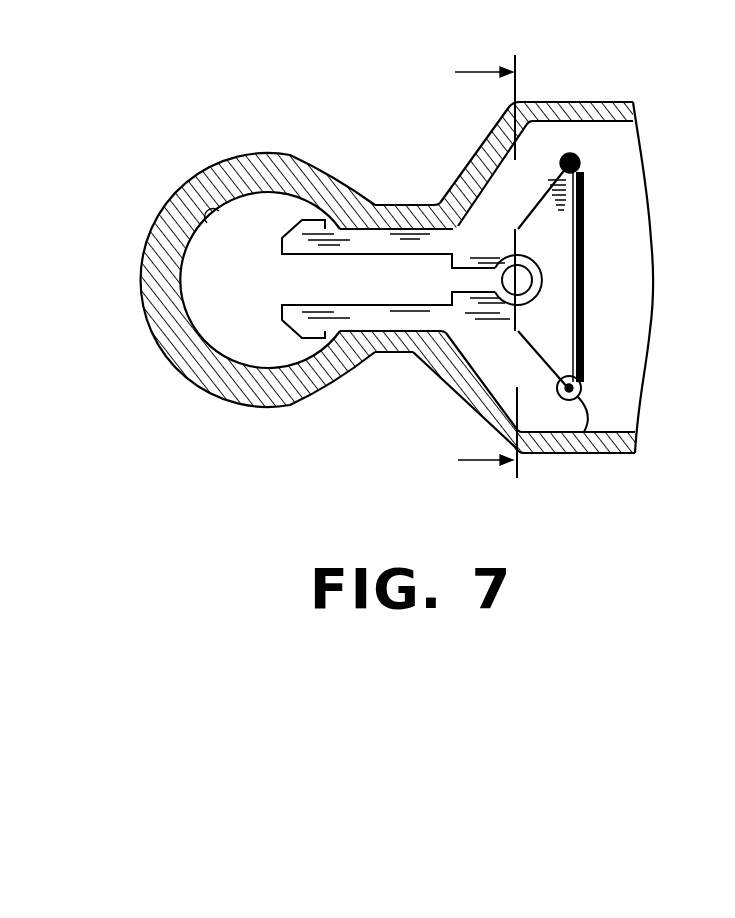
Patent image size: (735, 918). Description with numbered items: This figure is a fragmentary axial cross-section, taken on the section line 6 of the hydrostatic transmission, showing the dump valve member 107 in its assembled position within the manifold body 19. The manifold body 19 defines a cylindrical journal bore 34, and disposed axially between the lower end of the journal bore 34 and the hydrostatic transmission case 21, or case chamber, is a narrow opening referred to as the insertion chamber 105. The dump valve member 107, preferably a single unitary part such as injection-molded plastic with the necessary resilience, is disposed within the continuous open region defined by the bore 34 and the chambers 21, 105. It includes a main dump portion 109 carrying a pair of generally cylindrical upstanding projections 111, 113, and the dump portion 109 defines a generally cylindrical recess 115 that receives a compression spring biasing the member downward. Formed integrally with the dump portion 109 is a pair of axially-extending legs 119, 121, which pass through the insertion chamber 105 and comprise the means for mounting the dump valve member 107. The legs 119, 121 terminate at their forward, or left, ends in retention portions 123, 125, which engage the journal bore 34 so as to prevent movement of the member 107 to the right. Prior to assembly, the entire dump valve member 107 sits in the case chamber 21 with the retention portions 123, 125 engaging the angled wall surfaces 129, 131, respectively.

The section line 6 is at (490, 269).
The manifold body 19 is at (222, 387).
The hydrostatic transmission case 21 is at (623, 141).
The cylindrical journal bore 34 is at (172, 203).
The insertion chamber 105 is at (393, 266).
The dump valve member 107 is at (600, 341).
The main dump portion 109 is at (557, 230).
The upstanding projection 111 is at (570, 153).
The upstanding projection 113 is at (575, 440).
The cylindrical recess 115 is at (541, 284).
The axially-extending leg 119 is at (352, 240).
The axially-extending leg 121 is at (406, 318).
The retention portion 123 is at (323, 228).
The retention portion 125 is at (295, 345).
The angled wall surface 129 is at (470, 203).
The angled wall surface 131 is at (462, 358).